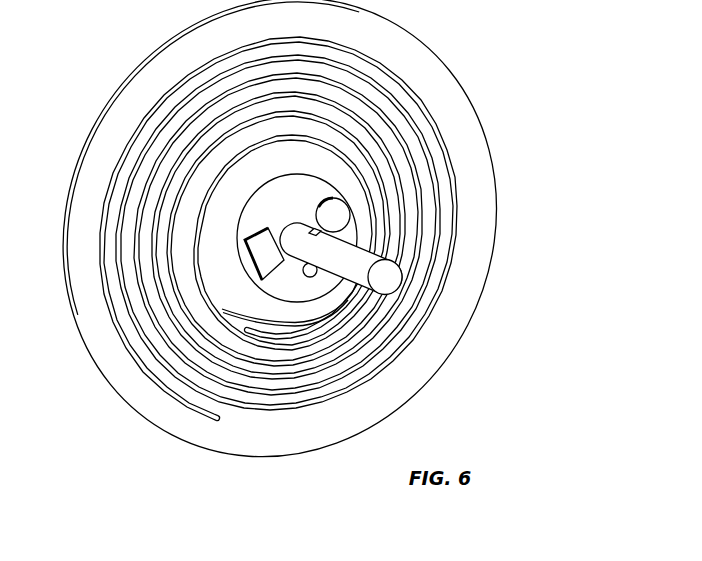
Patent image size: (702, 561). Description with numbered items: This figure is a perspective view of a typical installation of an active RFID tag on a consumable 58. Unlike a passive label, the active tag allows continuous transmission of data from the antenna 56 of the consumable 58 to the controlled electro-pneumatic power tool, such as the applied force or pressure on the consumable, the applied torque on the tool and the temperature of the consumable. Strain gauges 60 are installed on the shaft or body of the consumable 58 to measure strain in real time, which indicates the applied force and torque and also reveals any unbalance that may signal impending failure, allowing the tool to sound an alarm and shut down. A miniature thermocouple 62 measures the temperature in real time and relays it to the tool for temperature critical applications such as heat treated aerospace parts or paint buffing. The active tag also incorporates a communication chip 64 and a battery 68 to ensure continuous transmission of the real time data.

The antenna 56 is at (436, 275).
The consumable 58 is at (423, 64).
The strain gauges 60 is at (301, 255).
The miniature thermocouple 62 is at (305, 292).
The communication chip 64 is at (251, 269).
The battery 68 is at (350, 211).